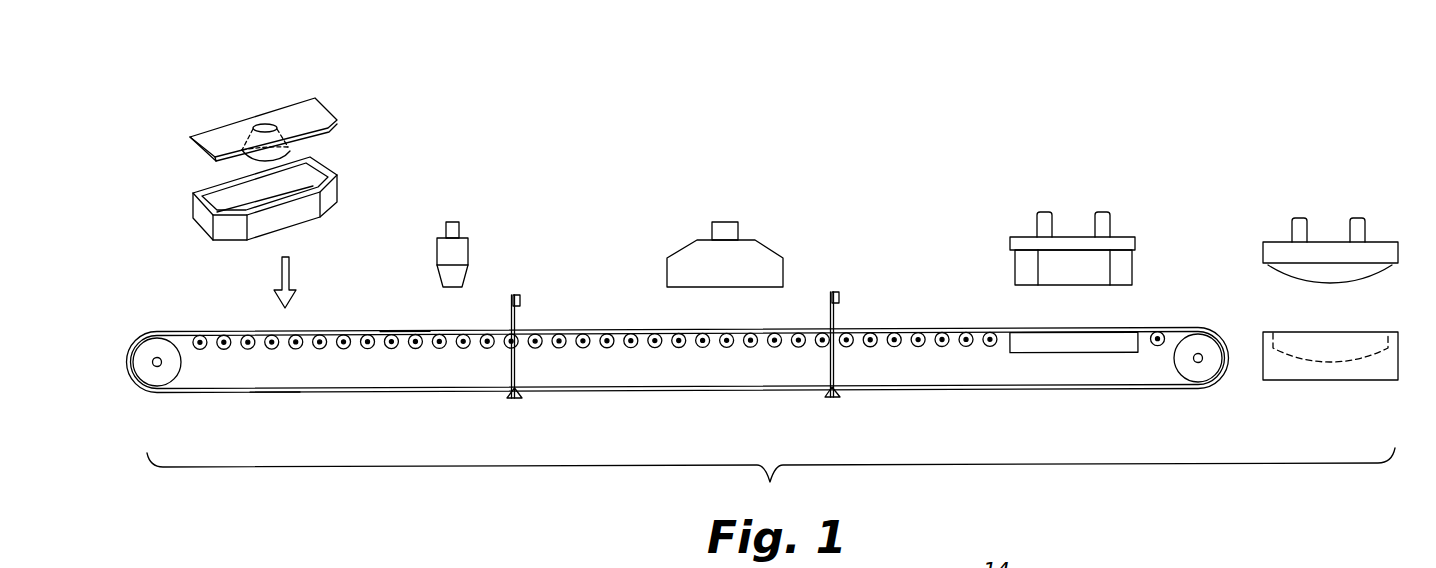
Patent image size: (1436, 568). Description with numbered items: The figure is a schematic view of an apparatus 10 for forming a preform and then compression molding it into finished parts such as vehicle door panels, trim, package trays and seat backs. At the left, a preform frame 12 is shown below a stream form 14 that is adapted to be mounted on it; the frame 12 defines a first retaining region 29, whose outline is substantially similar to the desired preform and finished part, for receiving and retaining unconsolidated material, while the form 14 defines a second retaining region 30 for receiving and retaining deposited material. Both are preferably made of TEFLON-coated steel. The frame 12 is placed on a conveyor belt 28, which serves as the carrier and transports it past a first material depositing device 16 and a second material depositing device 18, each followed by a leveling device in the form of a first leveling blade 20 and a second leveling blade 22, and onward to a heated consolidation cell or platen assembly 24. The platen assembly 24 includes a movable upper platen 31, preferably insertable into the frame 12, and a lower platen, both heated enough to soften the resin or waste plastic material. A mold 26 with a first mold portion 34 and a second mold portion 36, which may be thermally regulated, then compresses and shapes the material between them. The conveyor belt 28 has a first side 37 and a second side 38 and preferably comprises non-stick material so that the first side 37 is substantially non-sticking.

The apparatus 10 is at (677, 262).
The preform frame 12 is at (277, 191).
The stream form 14 is at (237, 122).
The first material depositing device 16 is at (437, 250).
The second material depositing device 18 is at (667, 270).
The first leveling blade 20 is at (498, 306).
The second leveling blade 22 is at (812, 308).
The heated platen assembly 24 is at (1070, 227).
The mold 26 is at (1302, 241).
The conveyor belt 28 is at (677, 394).
The first retaining region 29 is at (321, 168).
The second retaining region 30 is at (263, 127).
The upper platen 31 is at (1015, 275).
The first mold portion 34 is at (1273, 268).
The second mold portion 36 is at (1337, 382).
The first side 37 is at (402, 331).
The second side 38 is at (275, 372).